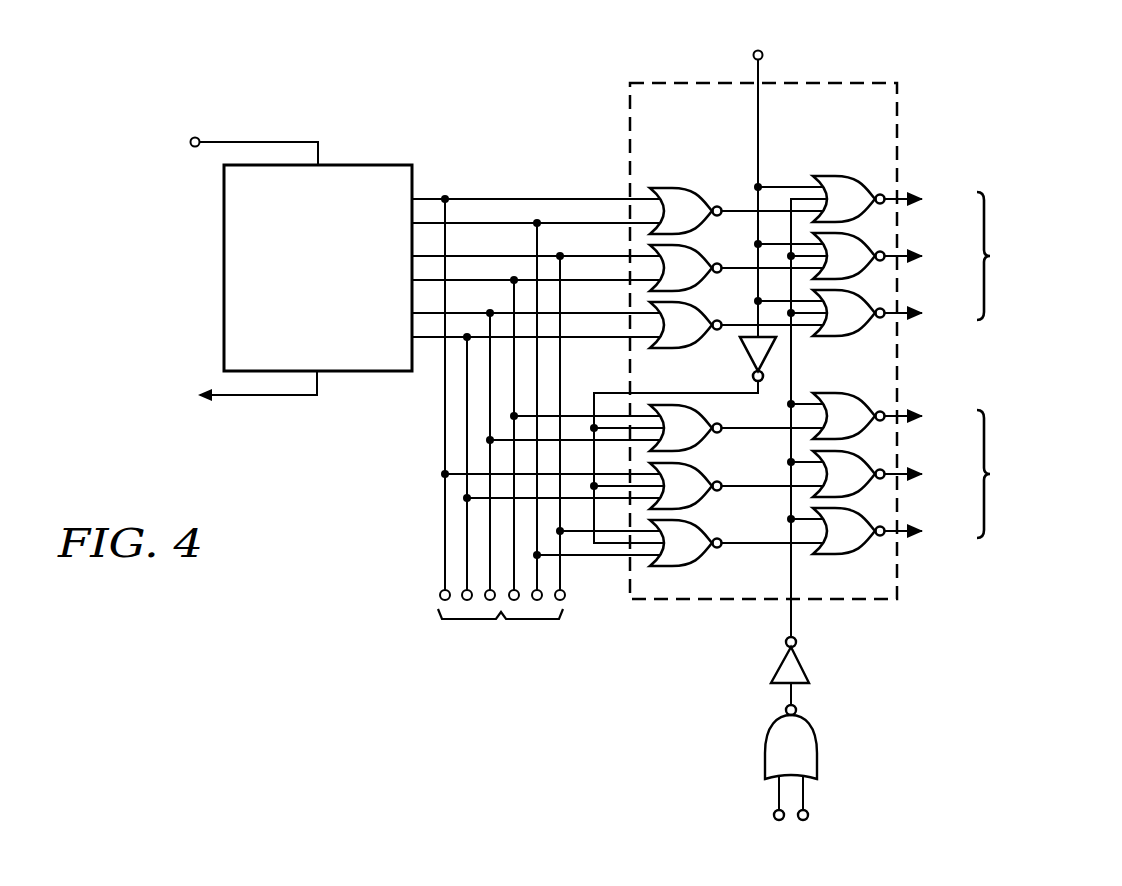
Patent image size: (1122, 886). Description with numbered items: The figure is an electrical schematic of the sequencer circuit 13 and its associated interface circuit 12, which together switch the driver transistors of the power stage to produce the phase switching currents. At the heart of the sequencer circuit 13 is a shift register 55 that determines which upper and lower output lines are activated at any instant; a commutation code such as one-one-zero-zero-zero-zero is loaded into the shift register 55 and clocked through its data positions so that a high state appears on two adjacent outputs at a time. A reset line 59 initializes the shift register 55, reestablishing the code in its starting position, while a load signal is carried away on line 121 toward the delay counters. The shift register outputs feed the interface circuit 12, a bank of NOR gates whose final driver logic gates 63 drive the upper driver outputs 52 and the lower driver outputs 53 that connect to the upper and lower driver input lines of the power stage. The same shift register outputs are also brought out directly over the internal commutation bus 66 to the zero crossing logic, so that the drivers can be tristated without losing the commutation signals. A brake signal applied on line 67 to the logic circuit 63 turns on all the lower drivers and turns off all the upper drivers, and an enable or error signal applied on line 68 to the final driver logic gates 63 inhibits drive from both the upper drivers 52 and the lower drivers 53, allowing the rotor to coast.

The interface circuit 12 is at (759, 325).
The sequencer circuit 13 is at (459, 116).
The upper driver outputs 52 is at (934, 167).
The lower driver outputs 53 is at (925, 553).
The shift register 55 is at (224, 256).
The reset line 59 is at (262, 142).
The logic circuit 63 is at (836, 155).
The internal commutation bus 66 is at (396, 571).
The brake signal line 67 is at (756, 186).
The enable signal line 68 is at (794, 624).
The load signal line 121 is at (262, 395).